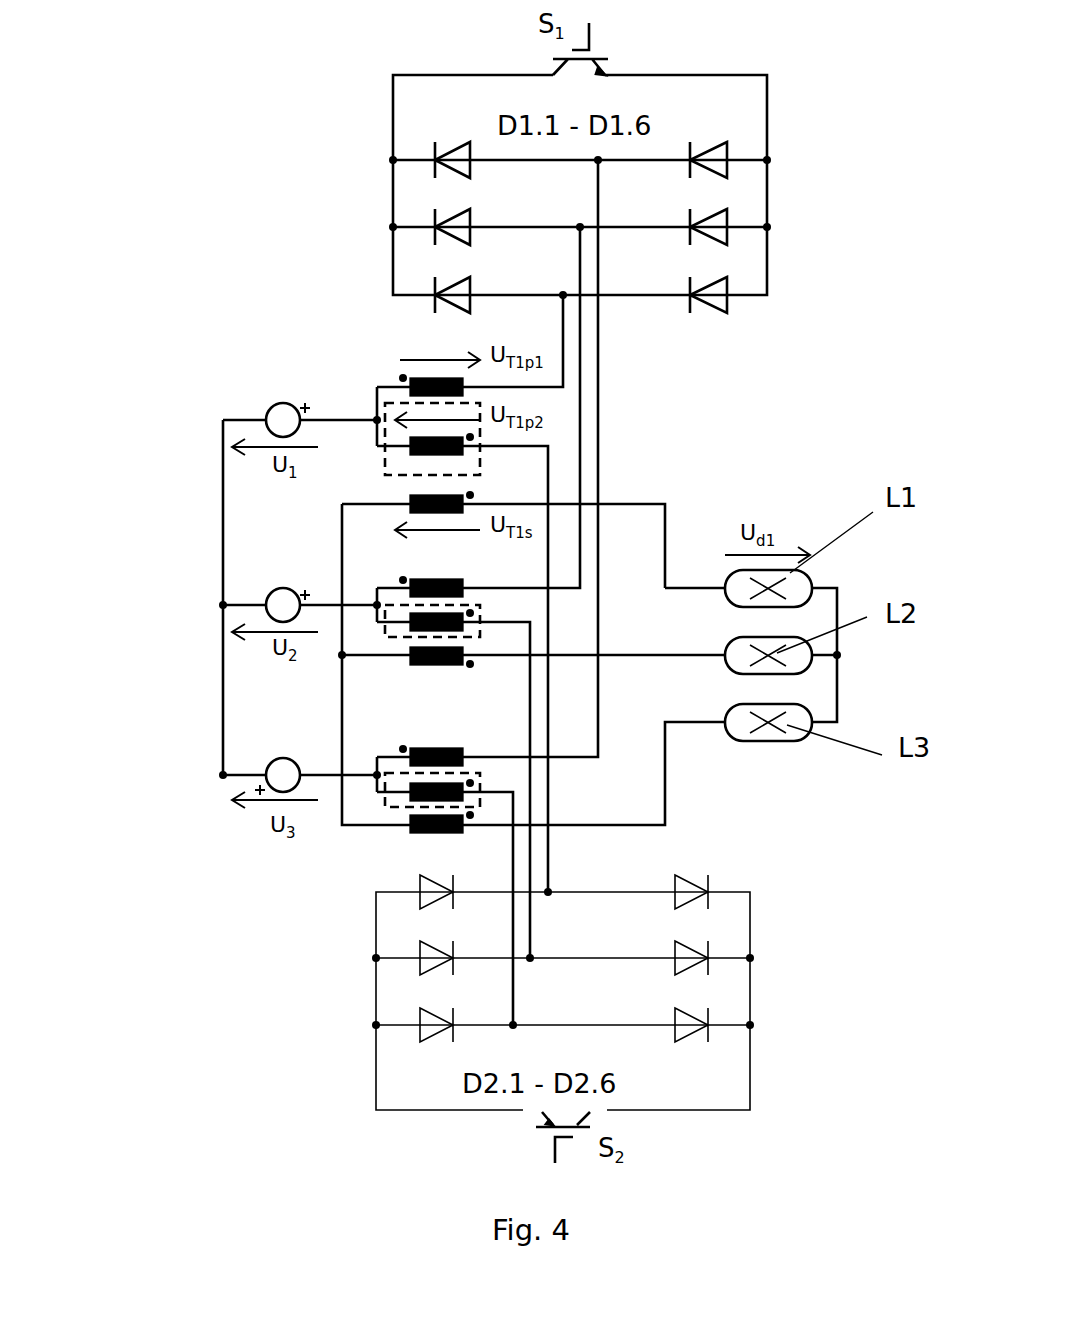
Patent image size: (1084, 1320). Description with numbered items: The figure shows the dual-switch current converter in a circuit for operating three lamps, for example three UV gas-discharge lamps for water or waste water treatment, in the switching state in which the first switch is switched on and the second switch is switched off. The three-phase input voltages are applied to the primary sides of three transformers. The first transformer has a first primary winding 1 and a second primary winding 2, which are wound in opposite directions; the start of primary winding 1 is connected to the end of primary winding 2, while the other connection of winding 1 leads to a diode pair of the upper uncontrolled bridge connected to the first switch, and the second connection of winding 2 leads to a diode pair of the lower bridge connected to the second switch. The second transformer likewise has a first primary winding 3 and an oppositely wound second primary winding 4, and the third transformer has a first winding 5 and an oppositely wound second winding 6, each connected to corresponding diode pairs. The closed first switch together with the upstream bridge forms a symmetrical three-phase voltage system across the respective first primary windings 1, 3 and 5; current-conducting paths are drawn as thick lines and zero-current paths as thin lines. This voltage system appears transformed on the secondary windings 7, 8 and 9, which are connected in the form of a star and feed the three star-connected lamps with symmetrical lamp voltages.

The first primary winding 1 is at (403, 378).
The second primary winding 2 is at (407, 443).
The first primary winding 3 is at (442, 583).
The second primary winding 4 is at (407, 615).
The first winding 5 is at (467, 760).
The second winding 6 is at (407, 790).
The secondary winding 7 is at (407, 504).
The secondary winding 8 is at (407, 655).
The secondary winding 9 is at (407, 823).